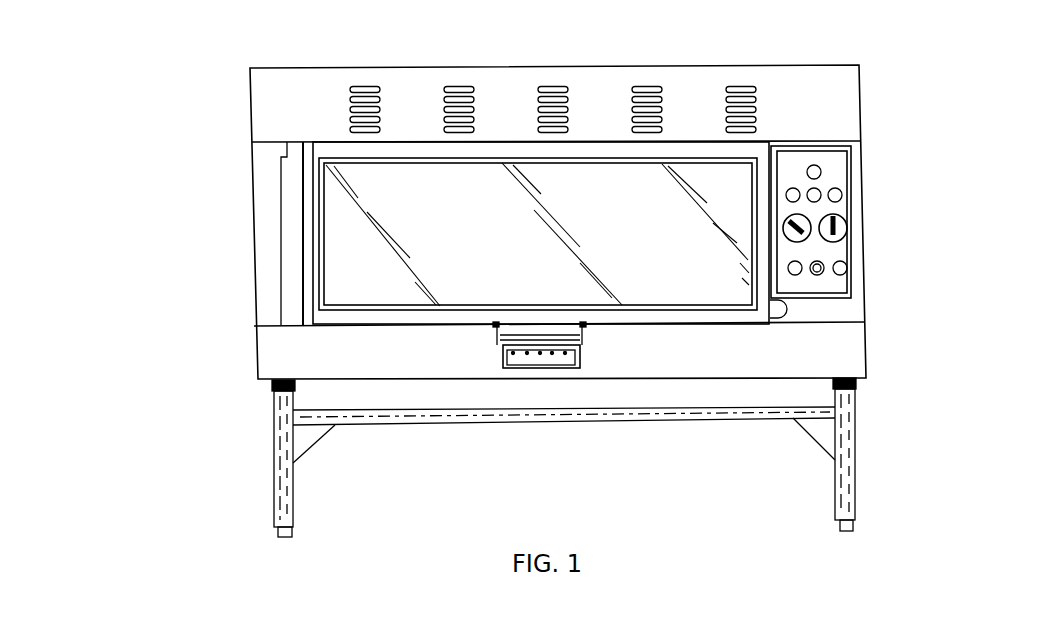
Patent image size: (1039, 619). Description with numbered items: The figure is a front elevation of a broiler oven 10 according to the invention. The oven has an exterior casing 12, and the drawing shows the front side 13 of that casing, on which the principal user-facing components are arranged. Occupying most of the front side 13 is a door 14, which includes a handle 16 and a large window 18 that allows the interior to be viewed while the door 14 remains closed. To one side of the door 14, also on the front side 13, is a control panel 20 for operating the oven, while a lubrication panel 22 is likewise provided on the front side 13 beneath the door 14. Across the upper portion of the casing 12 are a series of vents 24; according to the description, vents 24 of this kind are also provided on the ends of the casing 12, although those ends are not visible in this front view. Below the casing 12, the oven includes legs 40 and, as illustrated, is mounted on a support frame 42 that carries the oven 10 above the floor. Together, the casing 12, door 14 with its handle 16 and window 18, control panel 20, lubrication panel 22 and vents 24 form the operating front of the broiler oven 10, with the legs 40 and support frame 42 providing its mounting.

The broiler oven 10 is at (572, 279).
The exterior casing 12 is at (637, 222).
The front side 13 is at (840, 348).
The door 14 is at (452, 233).
The handle 16 is at (506, 395).
The window 18 is at (345, 289).
The control panel 20 is at (833, 255).
The lubrication panel 22 is at (548, 363).
The vents 24 is at (755, 93).
The legs 40 is at (852, 387).
The support frame 42 is at (850, 493).